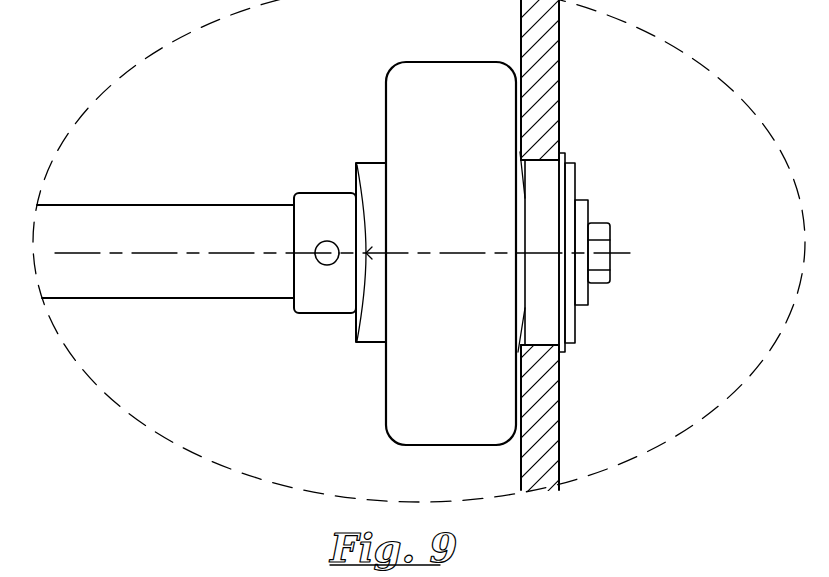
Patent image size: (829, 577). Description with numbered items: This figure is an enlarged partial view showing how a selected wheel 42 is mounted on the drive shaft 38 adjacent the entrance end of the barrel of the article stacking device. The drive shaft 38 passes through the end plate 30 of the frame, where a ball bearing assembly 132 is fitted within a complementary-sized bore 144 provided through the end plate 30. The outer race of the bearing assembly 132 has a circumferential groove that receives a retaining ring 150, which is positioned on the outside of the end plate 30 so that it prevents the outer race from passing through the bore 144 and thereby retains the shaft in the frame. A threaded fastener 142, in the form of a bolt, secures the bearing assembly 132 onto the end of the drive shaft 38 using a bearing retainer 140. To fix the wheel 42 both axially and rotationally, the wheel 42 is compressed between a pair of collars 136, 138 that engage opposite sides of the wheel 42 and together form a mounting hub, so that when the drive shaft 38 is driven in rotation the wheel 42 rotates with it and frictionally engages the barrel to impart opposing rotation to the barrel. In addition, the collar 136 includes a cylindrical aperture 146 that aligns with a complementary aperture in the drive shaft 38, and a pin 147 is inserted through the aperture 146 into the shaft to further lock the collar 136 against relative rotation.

The end plate 30 is at (560, 84).
The drive shaft 38 is at (143, 205).
The wheel 42 is at (443, 60).
The ball bearing assembly 132 is at (576, 180).
The collar 136 is at (330, 314).
The collar 138 is at (520, 348).
The bearing retainer 140 is at (590, 212).
The threaded fastener 142 is at (612, 278).
The bore 144 is at (545, 338).
The cylindrical aperture 146 is at (333, 243).
The pin 147 is at (316, 257).
The retaining ring 150 is at (566, 154).